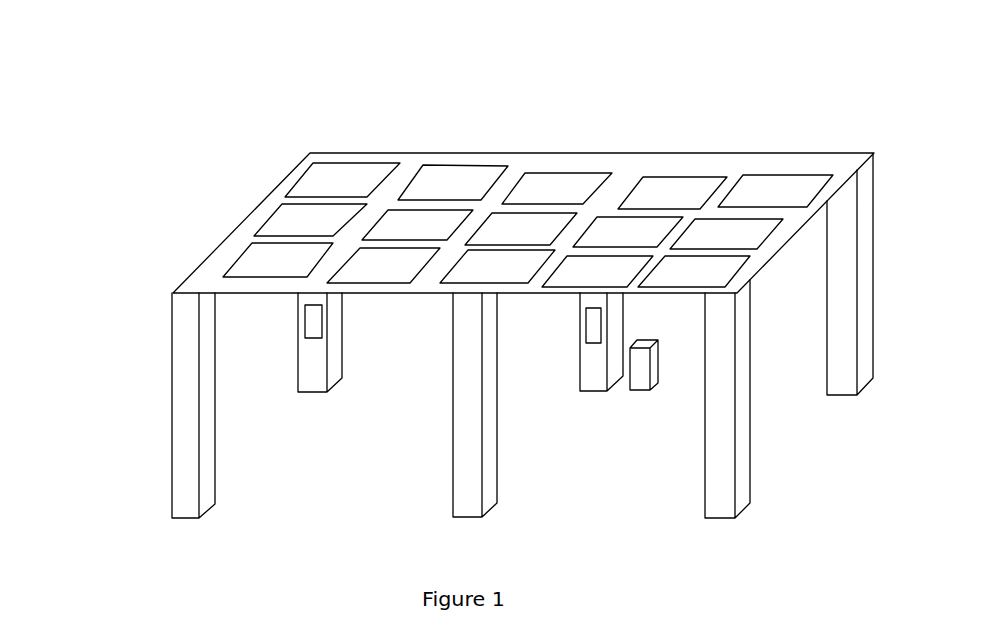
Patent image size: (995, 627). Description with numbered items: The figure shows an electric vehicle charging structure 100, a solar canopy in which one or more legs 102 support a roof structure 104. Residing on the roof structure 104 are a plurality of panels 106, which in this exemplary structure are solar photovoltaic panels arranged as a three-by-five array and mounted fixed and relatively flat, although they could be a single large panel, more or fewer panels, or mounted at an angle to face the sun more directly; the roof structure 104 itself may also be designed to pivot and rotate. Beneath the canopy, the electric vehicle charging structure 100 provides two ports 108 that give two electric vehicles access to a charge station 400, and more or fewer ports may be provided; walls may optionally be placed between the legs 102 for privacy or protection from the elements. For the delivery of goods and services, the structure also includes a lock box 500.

The electric vehicle charging structure 100 is at (314, 96).
The legs 102 is at (298, 370).
The roof structure 104 is at (797, 160).
The panels 106 is at (362, 190).
The ports 108 is at (307, 521).
The charge station 400 is at (322, 312).
The lock box 500 is at (659, 363).